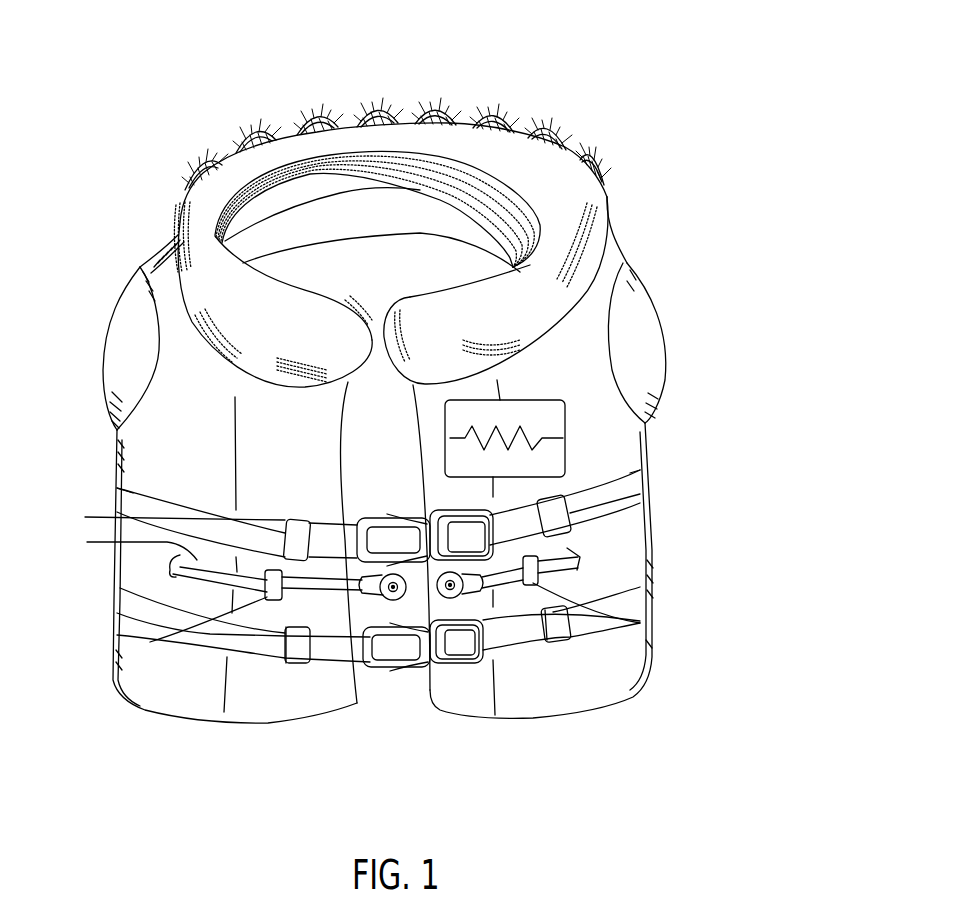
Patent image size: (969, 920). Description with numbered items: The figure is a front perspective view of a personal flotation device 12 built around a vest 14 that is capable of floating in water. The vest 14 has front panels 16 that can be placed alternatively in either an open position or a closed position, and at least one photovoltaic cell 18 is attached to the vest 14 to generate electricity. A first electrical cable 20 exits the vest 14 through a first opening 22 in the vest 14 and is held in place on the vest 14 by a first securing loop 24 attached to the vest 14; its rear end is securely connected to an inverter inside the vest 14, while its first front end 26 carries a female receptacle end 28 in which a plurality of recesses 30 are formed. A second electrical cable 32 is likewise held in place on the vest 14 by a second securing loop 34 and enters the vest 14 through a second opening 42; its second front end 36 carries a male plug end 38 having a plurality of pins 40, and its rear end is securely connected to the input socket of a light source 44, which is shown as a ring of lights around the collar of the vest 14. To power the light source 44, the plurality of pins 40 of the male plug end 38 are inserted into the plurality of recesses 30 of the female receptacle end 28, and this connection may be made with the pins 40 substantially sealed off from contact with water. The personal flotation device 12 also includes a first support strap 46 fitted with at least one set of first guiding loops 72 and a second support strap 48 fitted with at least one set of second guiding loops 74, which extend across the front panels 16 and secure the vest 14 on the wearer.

The personal flotation device 12 is at (563, 39).
The vest 14 is at (620, 243).
The front panels 16 is at (153, 457).
The photovoltaic cell 18 is at (567, 425).
The first electrical cable 20 is at (560, 557).
The first opening 22 is at (582, 549).
The first securing loop 24 is at (640, 621).
The first front end 26 is at (480, 592).
The female receptacle end 28 is at (456, 598).
The plurality of recesses 30 is at (443, 598).
The second electrical cable 32 is at (210, 566).
The second securing loop 34 is at (117, 635).
The second front end 36 is at (363, 625).
The male plug end 38 is at (389, 599).
The plurality of pins 40 is at (397, 600).
The second opening 42 is at (170, 565).
The light source 44 is at (500, 123).
The first support strap 46 is at (117, 488).
The second support strap 48 is at (120, 588).
The first guiding loops 72 is at (677, 503).
The second guiding loops 74 is at (292, 640).